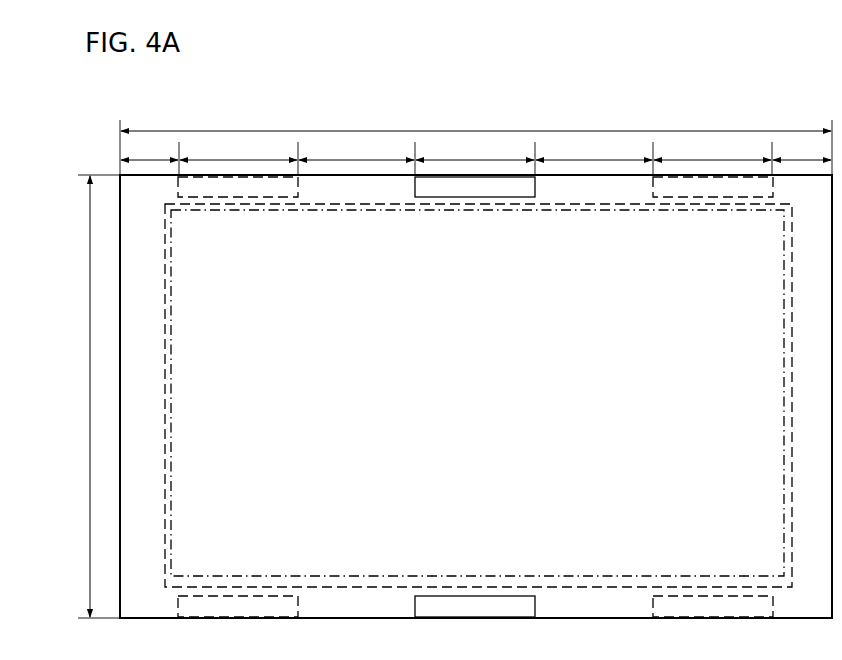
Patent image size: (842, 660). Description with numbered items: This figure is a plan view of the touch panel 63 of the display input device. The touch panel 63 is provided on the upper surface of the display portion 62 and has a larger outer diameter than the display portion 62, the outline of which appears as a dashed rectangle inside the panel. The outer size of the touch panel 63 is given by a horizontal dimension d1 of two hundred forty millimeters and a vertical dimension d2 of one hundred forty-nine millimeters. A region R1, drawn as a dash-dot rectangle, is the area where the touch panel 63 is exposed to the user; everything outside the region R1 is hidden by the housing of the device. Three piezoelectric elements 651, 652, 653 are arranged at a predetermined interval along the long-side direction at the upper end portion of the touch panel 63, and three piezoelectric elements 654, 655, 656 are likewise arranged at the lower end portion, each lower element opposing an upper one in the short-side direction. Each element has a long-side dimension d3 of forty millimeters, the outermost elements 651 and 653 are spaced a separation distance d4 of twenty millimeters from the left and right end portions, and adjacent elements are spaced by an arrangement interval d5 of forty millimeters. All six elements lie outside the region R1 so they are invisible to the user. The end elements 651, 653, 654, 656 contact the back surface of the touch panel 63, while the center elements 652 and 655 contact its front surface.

The display portion 62 is at (560, 198).
The touch panel 63 is at (621, 173).
The region R1 is at (385, 211).
The piezoelectric element 651 is at (263, 200).
The piezoelectric element 652 is at (503, 198).
The piezoelectric element 653 is at (743, 200).
The piezoelectric element 654 is at (258, 588).
The piezoelectric element 655 is at (503, 594).
The piezoelectric element 656 is at (740, 590).
The horizontal dimension d1 is at (476, 116).
The vertical dimension d2 is at (72, 396).
The dimension in the long-side direction d3 is at (475, 146).
The separation distance d4 is at (476, 146).
The arrangement interval d5 is at (475, 146).